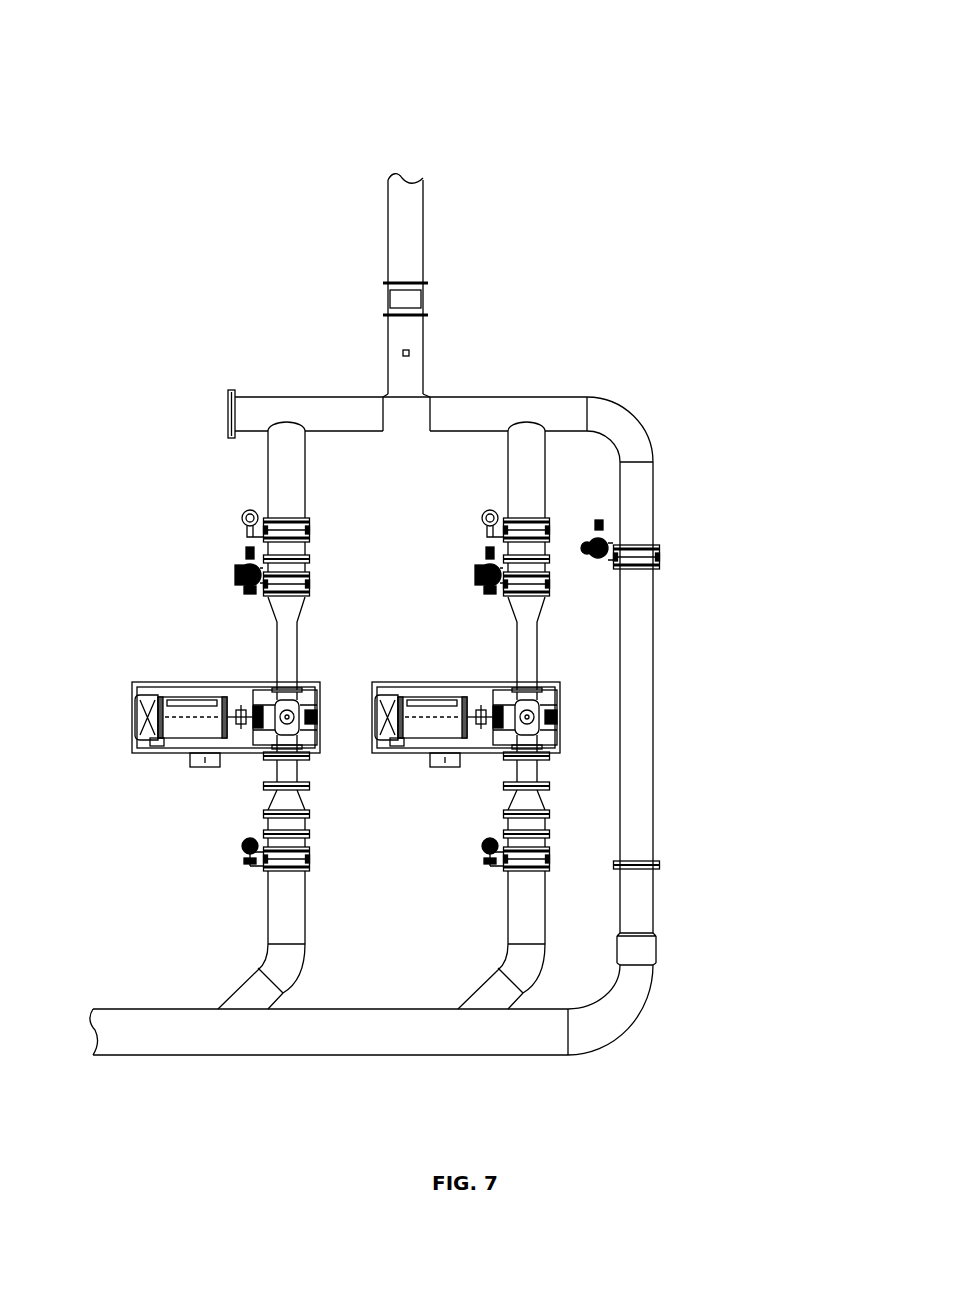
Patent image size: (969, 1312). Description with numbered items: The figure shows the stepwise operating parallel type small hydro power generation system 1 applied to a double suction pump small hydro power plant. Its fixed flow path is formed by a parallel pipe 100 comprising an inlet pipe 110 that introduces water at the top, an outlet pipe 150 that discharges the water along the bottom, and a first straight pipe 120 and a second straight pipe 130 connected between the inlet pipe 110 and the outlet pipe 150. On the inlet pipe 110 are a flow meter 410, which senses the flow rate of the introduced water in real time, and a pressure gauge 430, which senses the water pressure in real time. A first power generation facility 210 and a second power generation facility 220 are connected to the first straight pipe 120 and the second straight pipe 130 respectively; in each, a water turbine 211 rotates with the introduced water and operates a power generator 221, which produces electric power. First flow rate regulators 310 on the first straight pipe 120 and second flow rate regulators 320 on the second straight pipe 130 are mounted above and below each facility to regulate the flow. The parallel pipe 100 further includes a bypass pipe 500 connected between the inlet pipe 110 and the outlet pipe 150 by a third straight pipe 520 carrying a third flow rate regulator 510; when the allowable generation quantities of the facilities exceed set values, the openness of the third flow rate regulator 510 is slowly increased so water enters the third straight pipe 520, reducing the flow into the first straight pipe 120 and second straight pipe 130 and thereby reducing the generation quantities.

The stepwise operating parallel type small hydro power generation system 1 is at (400, 112).
The parallel pipe 100 is at (304, 366).
The inlet pipe 110 is at (425, 241).
The first straight pipe 120 is at (268, 480).
The second straight pipe 130 is at (476, 715).
The outlet pipe 150 is at (318, 1040).
The first power generation facility 210 is at (160, 754).
The water turbine 211 is at (280, 722).
The second power generation facility 220 is at (463, 700).
The power generator 221 is at (150, 712).
The first flow rate regulator 310 is at (240, 572).
The second flow rate regulator 320 is at (444, 691).
The flow meter 410 is at (420, 302).
The pressure gauge 430 is at (410, 354).
The bypass pipe 500 is at (770, 578).
The third flow rate regulator 510 is at (660, 557).
The third straight pipe 520 is at (640, 627).